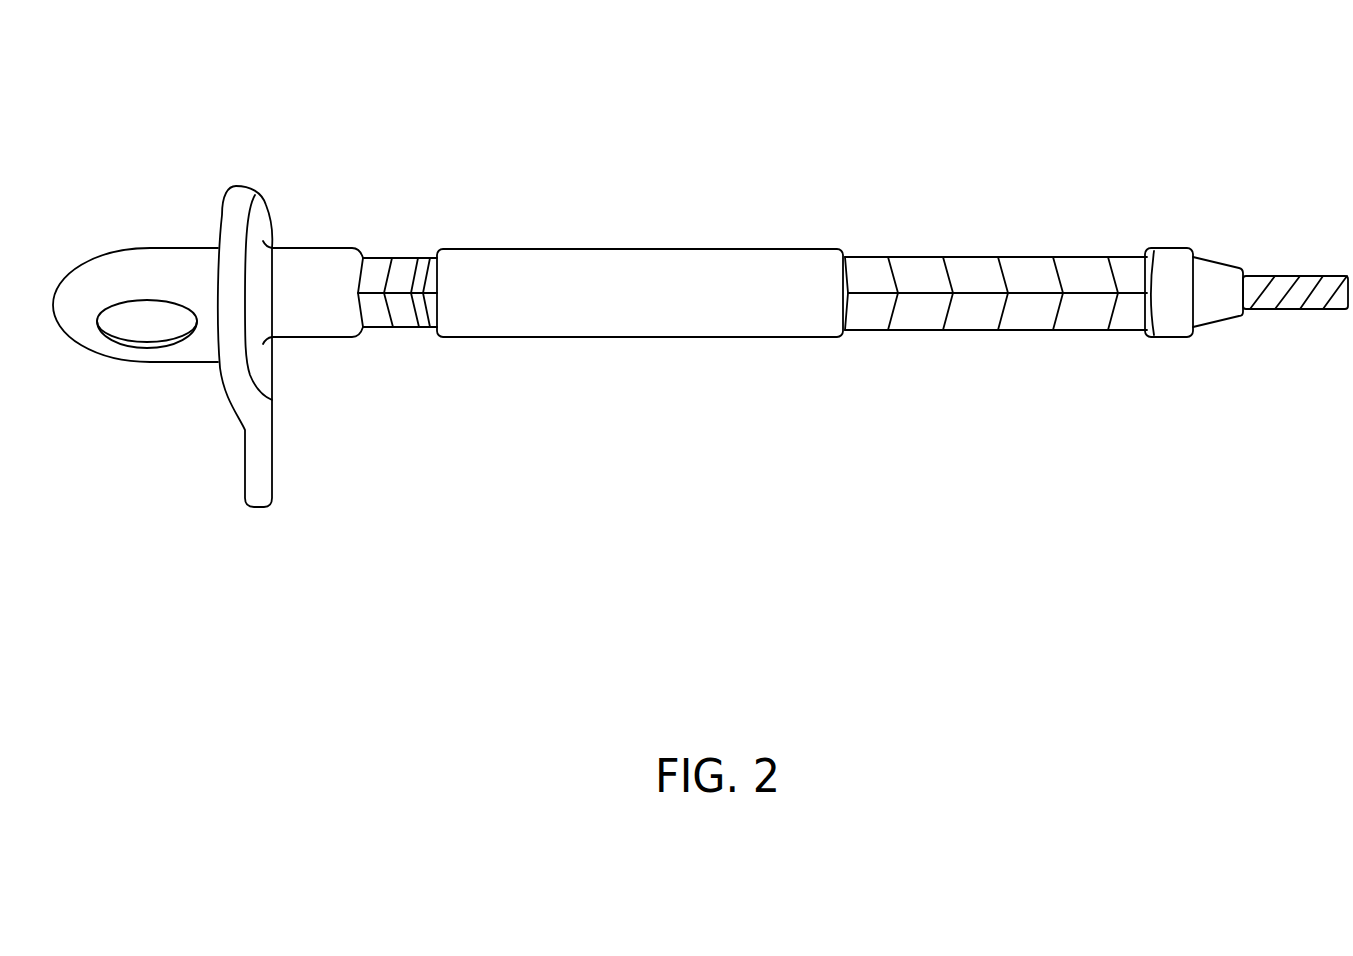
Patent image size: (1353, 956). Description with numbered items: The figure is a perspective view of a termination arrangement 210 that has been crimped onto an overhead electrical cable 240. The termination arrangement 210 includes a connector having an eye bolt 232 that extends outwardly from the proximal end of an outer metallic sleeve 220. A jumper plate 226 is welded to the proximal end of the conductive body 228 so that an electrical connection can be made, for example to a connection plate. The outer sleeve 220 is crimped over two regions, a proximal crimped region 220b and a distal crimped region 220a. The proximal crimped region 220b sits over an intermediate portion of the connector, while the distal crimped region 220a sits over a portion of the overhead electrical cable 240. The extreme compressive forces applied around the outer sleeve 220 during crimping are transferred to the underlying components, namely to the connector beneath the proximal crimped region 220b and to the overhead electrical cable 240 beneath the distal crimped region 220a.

The termination arrangement 210 is at (783, 168).
The outer metallic sleeve 220 is at (595, 248).
The distal crimped region 220a is at (1145, 230).
The proximal crimped region 220b is at (445, 243).
The jumper plate 226 is at (257, 440).
The conductive body 228 is at (680, 325).
The eye bolt 232 is at (116, 273).
The overhead electrical cable 240 is at (1270, 273).